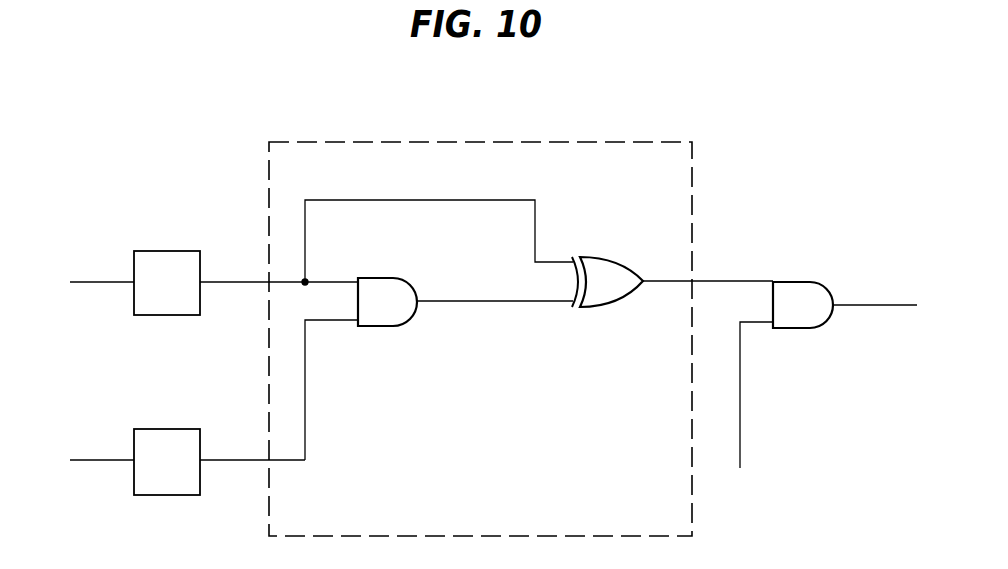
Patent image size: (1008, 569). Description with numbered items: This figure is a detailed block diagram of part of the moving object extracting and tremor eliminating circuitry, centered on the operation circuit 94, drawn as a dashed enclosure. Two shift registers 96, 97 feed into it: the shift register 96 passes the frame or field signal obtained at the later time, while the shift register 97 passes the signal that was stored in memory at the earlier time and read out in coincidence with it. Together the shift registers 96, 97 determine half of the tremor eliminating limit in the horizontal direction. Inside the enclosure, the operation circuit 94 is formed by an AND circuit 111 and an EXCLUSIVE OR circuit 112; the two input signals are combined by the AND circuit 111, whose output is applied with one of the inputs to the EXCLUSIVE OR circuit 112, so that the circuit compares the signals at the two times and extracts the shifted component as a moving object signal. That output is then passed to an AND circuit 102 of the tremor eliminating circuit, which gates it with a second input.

The operation circuit 94 is at (507, 143).
The shift register 96 is at (147, 316).
The shift register 97 is at (147, 496).
The AND circuit 111 is at (403, 277).
The EXCLUSIVE OR circuit 112 is at (625, 265).
The AND circuit 102 is at (805, 329).